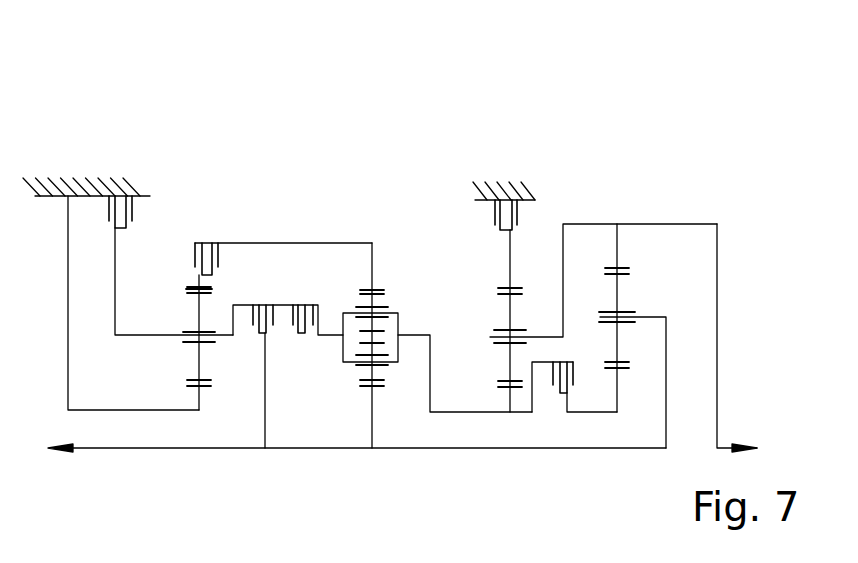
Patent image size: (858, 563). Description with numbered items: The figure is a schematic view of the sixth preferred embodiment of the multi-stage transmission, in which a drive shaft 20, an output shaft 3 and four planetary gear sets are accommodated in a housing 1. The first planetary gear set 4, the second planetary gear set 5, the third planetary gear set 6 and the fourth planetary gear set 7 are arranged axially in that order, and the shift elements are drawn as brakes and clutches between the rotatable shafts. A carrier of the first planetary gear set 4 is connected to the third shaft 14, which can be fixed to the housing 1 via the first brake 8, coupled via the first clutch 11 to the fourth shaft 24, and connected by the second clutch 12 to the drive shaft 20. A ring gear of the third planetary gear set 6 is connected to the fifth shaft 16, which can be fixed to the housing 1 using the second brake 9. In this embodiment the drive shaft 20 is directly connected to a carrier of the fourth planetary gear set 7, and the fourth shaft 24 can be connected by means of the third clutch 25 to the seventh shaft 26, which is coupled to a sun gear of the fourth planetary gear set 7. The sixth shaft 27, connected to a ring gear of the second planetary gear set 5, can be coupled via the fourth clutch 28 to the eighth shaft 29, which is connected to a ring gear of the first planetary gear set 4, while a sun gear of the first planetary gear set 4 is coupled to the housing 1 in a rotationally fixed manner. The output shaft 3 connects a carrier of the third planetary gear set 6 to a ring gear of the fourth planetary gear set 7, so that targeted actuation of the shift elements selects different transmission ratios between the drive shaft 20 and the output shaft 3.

The housing 1 is at (124, 185).
The output shaft 3 is at (717, 305).
The first planetary gear set 4 is at (199, 160).
The second planetary gear set 5 is at (369, 160).
The third planetary gear set 6 is at (508, 160).
The fourth planetary gear set 7 is at (614, 160).
The first brake 8 is at (113, 200).
The second brake 9 is at (507, 212).
The first clutch 11 is at (300, 335).
The second clutch 12 is at (259, 335).
The third shaft 14 is at (113, 297).
The fifth shaft 16 is at (510, 264).
The drive shaft 20 is at (165, 448).
The fourth shaft 24 is at (430, 372).
The third clutch 25 is at (555, 380).
The seventh shaft 26 is at (585, 412).
The sixth shaft 27 is at (304, 243).
The fourth clutch 28 is at (207, 248).
The eighth shaft 29 is at (197, 287).